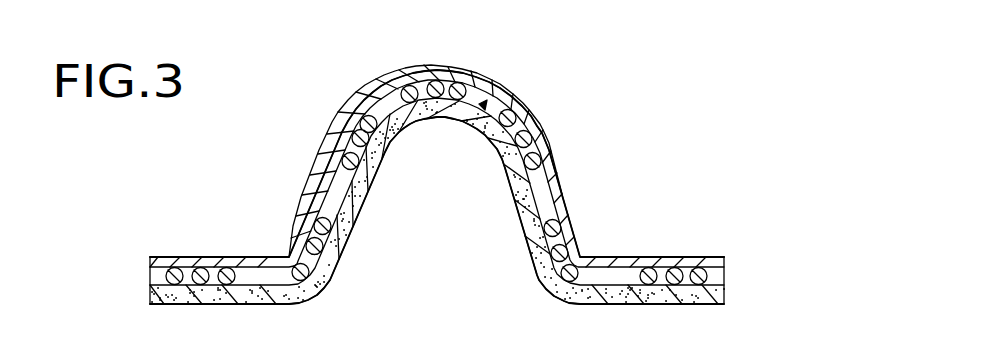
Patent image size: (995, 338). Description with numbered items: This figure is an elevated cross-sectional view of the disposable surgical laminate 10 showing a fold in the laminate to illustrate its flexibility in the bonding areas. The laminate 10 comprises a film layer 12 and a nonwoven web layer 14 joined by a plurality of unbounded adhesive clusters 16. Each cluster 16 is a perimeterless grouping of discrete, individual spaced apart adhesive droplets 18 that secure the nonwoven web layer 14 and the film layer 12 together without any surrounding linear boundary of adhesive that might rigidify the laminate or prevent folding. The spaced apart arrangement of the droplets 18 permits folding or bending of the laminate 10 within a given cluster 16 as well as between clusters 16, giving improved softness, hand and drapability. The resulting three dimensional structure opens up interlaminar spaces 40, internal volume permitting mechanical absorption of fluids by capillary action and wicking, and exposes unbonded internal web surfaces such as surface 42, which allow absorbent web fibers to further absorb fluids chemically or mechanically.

The disposable surgical laminate 10 is at (302, 182).
The film layer 12 is at (551, 174).
The nonwoven web layer 14 is at (567, 200).
The unbounded adhesive cluster 16 is at (588, 257).
The adhesive droplets 18 is at (407, 85).
The interlaminar spaces 40 is at (380, 104).
The exposed unbonded internal web surface 42 is at (488, 104).